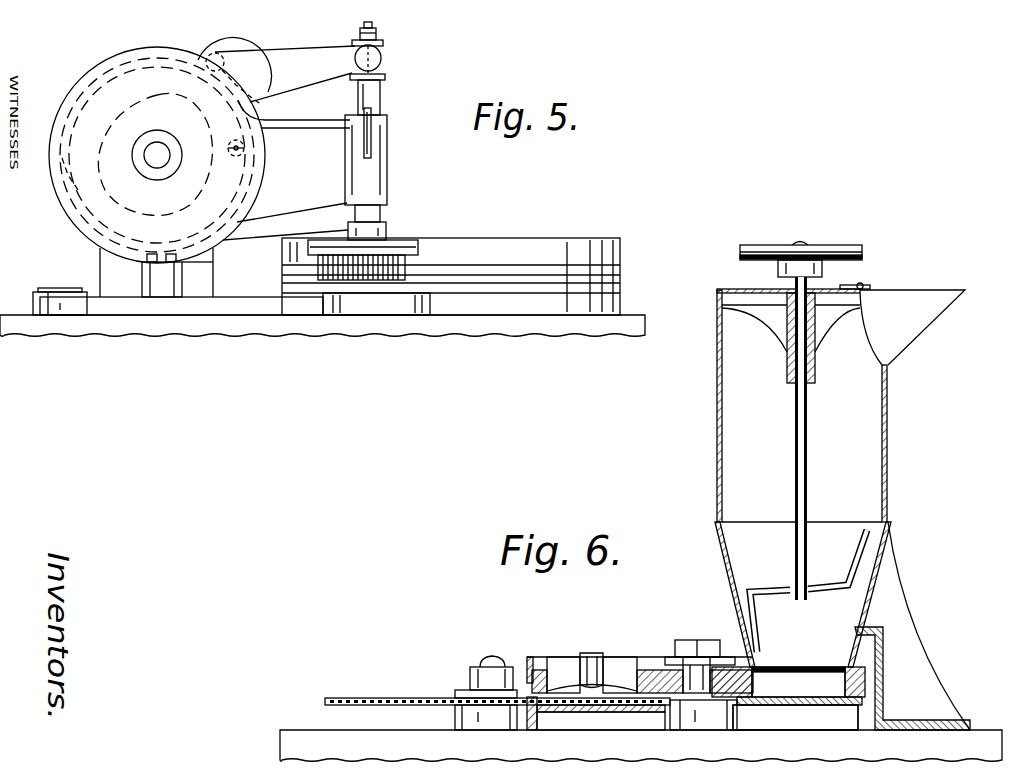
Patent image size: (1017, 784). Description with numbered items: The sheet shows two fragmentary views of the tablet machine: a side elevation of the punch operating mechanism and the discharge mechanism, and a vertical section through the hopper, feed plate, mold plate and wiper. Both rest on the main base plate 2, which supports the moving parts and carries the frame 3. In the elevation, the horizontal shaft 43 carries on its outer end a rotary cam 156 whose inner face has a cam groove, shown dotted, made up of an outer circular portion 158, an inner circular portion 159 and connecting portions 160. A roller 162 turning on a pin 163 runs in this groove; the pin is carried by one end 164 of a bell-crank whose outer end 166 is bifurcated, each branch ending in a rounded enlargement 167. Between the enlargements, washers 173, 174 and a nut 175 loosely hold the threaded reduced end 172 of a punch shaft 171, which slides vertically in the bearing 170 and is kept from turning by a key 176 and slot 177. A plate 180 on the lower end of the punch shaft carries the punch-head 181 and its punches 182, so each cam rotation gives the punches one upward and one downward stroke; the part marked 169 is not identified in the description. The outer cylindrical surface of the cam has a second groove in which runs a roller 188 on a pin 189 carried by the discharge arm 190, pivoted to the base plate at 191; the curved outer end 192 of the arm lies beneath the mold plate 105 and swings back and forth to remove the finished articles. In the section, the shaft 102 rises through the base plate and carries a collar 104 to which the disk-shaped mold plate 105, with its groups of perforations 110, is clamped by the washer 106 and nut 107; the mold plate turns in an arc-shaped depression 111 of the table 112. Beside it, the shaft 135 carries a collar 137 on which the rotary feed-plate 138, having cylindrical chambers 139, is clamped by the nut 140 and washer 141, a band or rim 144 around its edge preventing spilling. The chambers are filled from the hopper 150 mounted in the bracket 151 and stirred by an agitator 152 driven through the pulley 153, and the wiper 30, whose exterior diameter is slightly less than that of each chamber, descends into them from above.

In FIG. 5, the main base plate 2 is at (322, 325).
In FIG. 6, the main base plate 2 is at (641, 745).
In FIG. 5, the frame 3 is at (156, 272).
In FIG. 6, the wiper 30 is at (610, 670).
In FIG. 5, the horizontal shaft 43 is at (157, 155).
In FIG. 6, the shaft 102 is at (492, 658).
In FIG. 6, the collar 104 is at (472, 719).
In FIG. 6, the mold-plate 105 is at (330, 699).
In FIG. 6, the washer 106 is at (458, 694).
In FIG. 6, the nut 107 is at (472, 672).
In FIG. 6, the perforations 110 is at (372, 697).
In FIG. 6, the arc-shaped depression 111 is at (612, 713).
In FIG. 6, the table 112 is at (775, 712).
In FIG. 6, the shaft 135 is at (700, 678).
In FIG. 6, the collar 137 is at (696, 718).
In FIG. 6, the rotary feed-plate 138 is at (650, 670).
In FIG. 6, the cylindrical chambers 139 is at (560, 672).
In FIG. 6, the nut 140 is at (705, 648).
In FIG. 6, the washer 141 is at (722, 662).
In FIG. 6, the band or rim 144 is at (530, 657).
In FIG. 6, the hopper 150 is at (884, 433).
In FIG. 6, the bracket 151 is at (841, 626).
In FIG. 6, the agitator 152 is at (818, 584).
In FIG. 6, the pulley 153 is at (843, 256).
In FIG. 5, the rotary cam 156 is at (157, 155).
In FIG. 5, the outer circular portion 158 is at (240, 222).
In FIG. 5, the inner circular portion 159 is at (58, 186).
In FIG. 5, the connecting portions 160 is at (60, 116).
In FIG. 5, the roller 162 is at (246, 149).
In FIG. 5, the pin 163 is at (250, 143).
In FIG. 5, the end of bell-crank 164 is at (262, 110).
In FIG. 5, the outer end of bell-crank 166 is at (285, 74).
In FIG. 5, the rounded enlargement 167 is at (372, 60).
In FIG. 5, the arm 169 is at (285, 211).
In FIG. 5, the bearing 170 is at (372, 165).
In FIG. 5, the punch shaft 171 is at (381, 97).
In FIG. 5, the threaded reduced end 172 is at (373, 24).
In FIG. 5, the washer 173 is at (385, 78).
In FIG. 5, the washer 174 is at (383, 42).
In FIG. 5, the nut 175 is at (360, 31).
In FIG. 5, the key 176 is at (372, 113).
In FIG. 5, the slot 177 is at (372, 134).
In FIG. 5, the plate 180 is at (408, 247).
In FIG. 5, the punch-head 181 is at (410, 253).
In FIG. 5, the punches 182 is at (404, 262).
In FIG. 5, the roller 188 is at (142, 265).
In FIG. 5, the pin 189 is at (213, 262).
In FIG. 5, the discharge arm 190 is at (162, 305).
In FIG. 5, the pivot 191 is at (55, 290).
In FIG. 5, the curved outer end 192 is at (368, 305).